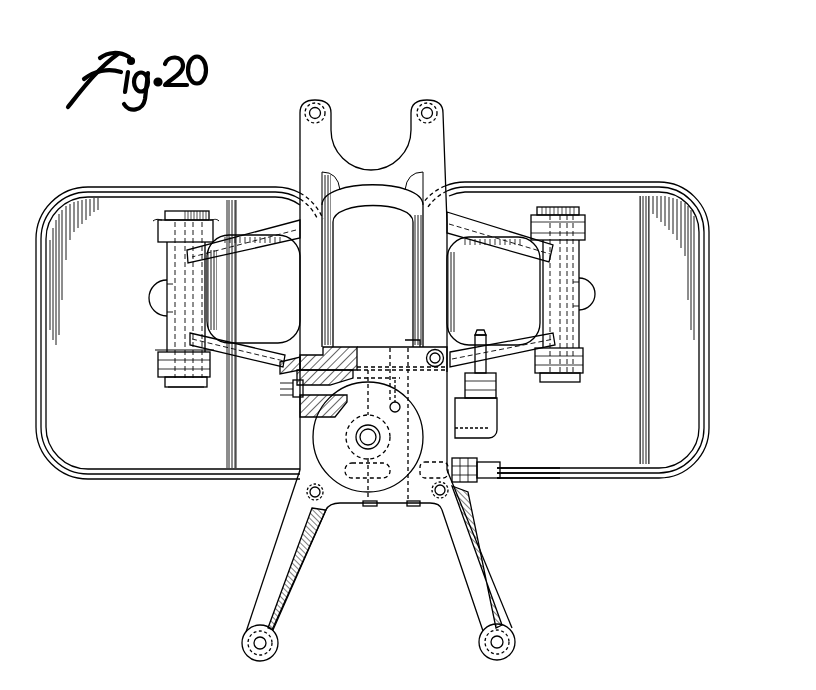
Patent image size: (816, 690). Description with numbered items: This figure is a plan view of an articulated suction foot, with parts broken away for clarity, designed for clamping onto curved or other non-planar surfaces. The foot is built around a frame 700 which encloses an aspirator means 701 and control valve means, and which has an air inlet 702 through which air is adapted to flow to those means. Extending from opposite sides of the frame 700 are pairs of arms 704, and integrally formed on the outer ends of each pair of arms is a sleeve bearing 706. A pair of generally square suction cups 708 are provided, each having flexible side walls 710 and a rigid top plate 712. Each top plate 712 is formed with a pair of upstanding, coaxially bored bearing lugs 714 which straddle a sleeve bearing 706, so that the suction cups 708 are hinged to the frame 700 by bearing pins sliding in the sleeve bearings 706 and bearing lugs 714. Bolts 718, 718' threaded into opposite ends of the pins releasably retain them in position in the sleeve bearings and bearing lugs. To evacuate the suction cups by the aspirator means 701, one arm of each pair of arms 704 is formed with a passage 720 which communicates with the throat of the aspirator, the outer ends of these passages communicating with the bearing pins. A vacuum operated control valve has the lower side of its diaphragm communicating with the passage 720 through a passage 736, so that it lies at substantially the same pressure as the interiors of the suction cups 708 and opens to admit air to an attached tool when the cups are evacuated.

The frame 700 is at (283, 397).
The aspirator means 701 is at (316, 409).
The air inlet 702 is at (497, 468).
The arms 704 is at (272, 222).
The sleeve bearing 706 is at (166, 338).
The suction cups 708 is at (720, 409).
The flexible side walls 710 is at (684, 477).
The rigid top plate 712 is at (104, 468).
The bearing lugs 714 is at (586, 226).
The bolts 718 is at (389, 187).
The lower caps 718' is at (354, 394).
The passage 720 is at (351, 356).
The passage 736 is at (390, 404).